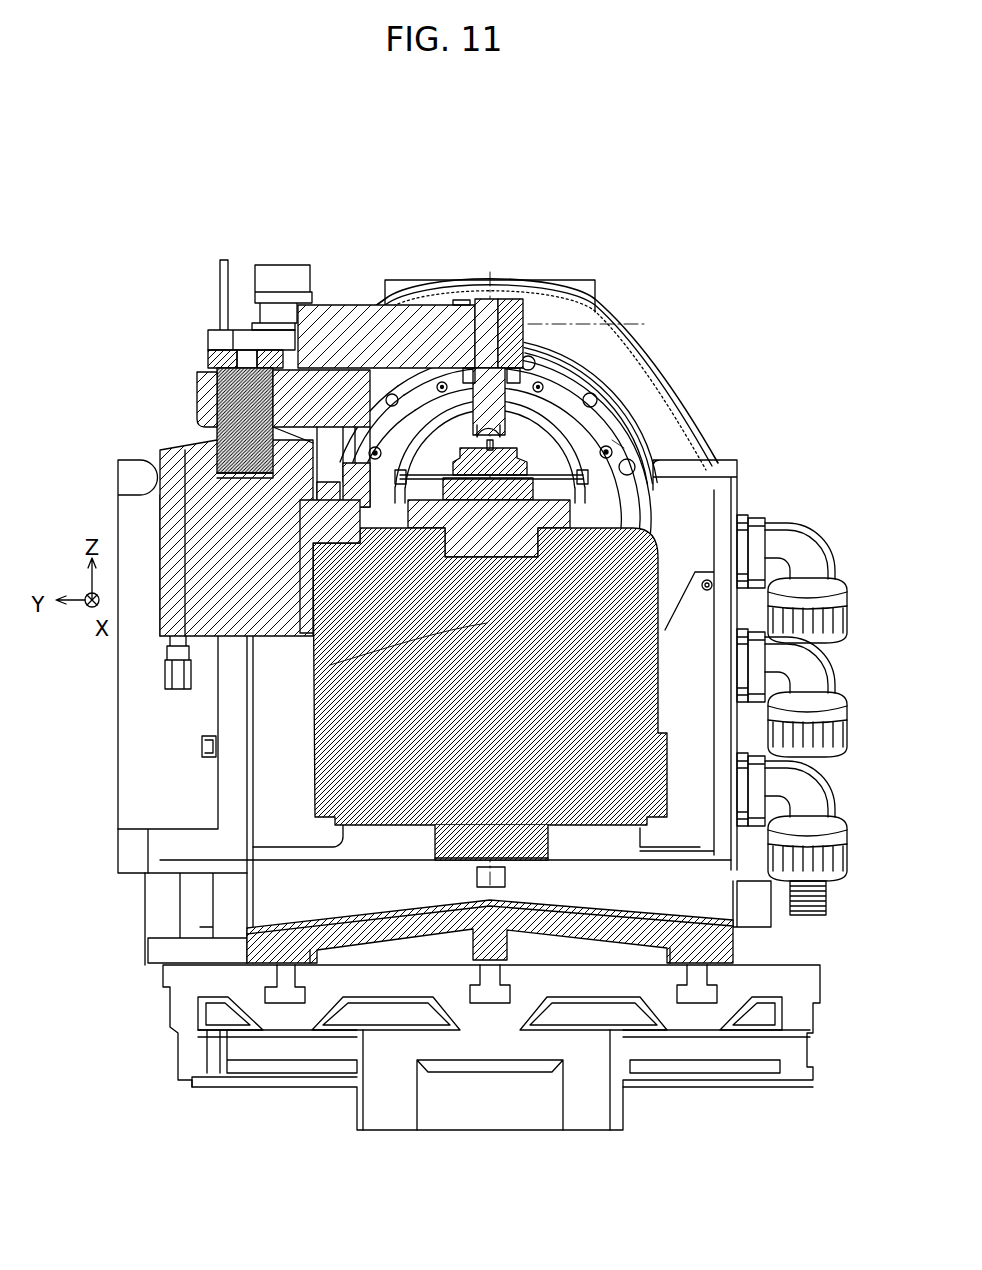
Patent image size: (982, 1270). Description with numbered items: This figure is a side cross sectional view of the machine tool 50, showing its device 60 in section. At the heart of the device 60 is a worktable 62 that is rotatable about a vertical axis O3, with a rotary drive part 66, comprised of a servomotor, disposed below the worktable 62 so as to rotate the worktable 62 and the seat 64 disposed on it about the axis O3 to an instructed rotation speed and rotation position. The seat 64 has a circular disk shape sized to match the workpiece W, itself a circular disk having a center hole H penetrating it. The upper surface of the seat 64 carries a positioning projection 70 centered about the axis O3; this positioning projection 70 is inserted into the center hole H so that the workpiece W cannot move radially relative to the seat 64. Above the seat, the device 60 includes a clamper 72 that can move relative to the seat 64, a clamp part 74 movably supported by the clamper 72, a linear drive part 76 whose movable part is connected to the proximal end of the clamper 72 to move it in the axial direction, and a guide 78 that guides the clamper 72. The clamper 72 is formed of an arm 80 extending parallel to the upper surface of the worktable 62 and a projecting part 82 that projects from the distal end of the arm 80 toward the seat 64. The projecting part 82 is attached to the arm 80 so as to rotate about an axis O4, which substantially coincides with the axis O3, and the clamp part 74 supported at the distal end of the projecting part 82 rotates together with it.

The machine tool 50 is at (797, 113).
The device 60 is at (669, 262).
The worktable 62 is at (562, 500).
The seat 64 is at (600, 481).
The rotary drive part 66 is at (423, 683).
The positioning projection 70 is at (596, 453).
The clamper 72 is at (533, 307).
The clamp part 74 is at (598, 413).
The linear drive part 76 is at (242, 407).
The guide 78 is at (357, 443).
The arm 80 is at (407, 332).
The projecting part 82 is at (548, 390).
The workpiece W is at (618, 440).
The center hole H is at (470, 457).
The axis O3 is at (330, 665).
The axis O4 is at (647, 327).